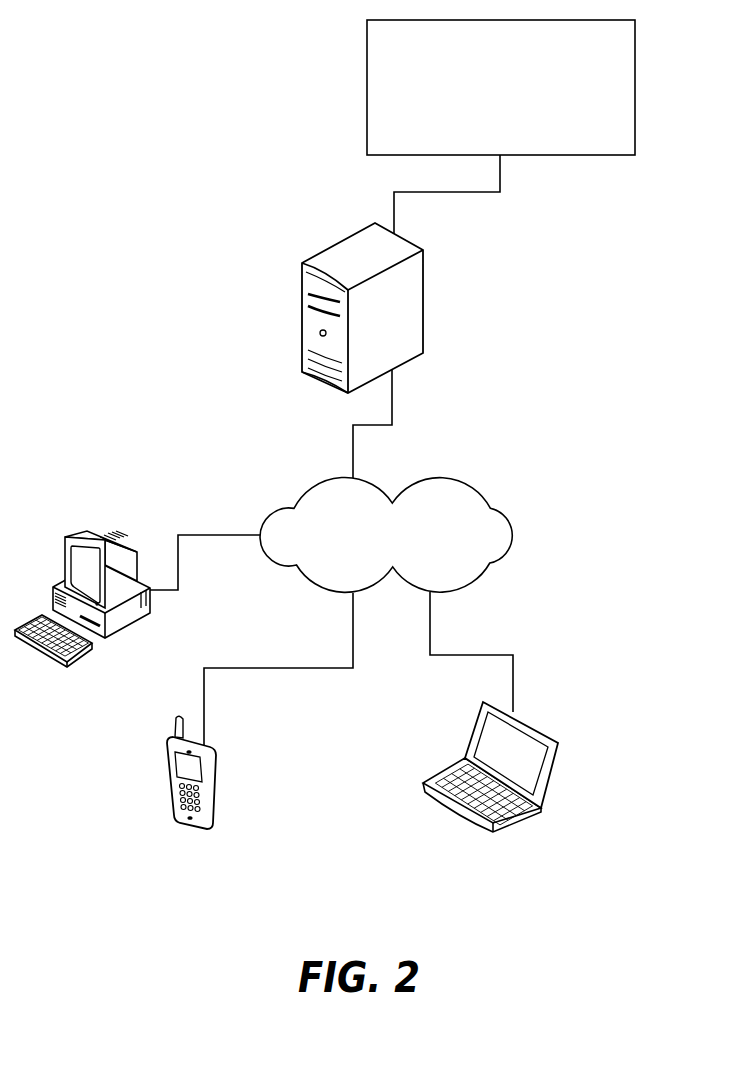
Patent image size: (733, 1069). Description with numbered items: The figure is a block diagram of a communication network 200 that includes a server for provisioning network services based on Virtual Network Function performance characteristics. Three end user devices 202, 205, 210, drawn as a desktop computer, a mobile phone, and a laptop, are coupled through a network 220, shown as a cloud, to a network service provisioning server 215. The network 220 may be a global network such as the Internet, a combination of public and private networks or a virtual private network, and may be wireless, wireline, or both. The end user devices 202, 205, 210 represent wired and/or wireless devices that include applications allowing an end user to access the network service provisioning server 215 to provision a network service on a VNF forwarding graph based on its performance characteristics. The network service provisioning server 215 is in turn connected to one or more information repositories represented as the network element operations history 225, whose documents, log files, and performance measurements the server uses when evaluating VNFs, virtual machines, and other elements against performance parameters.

The communication network 200 is at (128, 126).
The end user device 202 is at (82, 532).
The end user device 205 is at (222, 817).
The end user device 210 is at (550, 730).
The network service provisioning server 215 is at (423, 275).
The network 220 is at (413, 547).
The network element operations history 225 is at (522, 132).